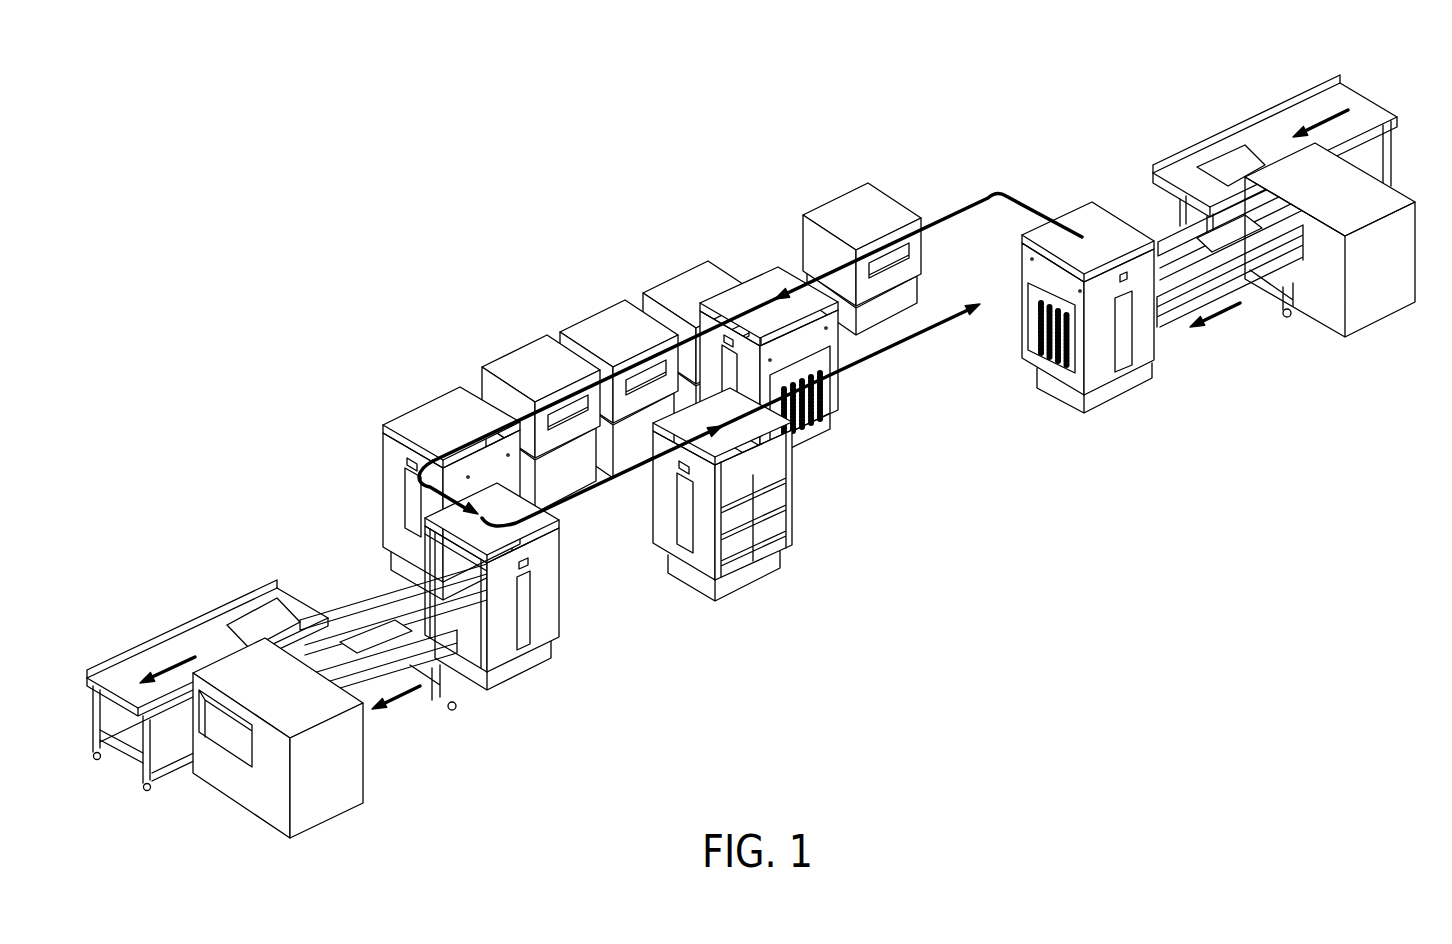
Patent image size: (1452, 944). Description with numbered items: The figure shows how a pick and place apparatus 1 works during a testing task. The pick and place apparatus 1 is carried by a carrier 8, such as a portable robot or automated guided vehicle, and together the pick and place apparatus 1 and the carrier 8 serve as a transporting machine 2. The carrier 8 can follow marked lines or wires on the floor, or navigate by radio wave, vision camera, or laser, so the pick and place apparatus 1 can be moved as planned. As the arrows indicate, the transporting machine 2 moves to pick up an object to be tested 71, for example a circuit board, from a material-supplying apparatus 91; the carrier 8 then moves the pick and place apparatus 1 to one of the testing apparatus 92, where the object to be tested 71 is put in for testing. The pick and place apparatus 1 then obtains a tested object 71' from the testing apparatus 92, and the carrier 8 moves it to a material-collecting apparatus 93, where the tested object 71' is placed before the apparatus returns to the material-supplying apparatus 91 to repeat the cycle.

The pick and place apparatus 1 is at (1003, 331).
The transporting machine 2 is at (836, 460).
The carrier 8 is at (1049, 407).
The object to be tested 71 is at (1231, 138).
The tested object 71' is at (322, 607).
The material-supplying apparatus 91 is at (1256, 93).
The testing apparatus 92 is at (741, 221).
The material-collecting apparatus 93 is at (258, 576).